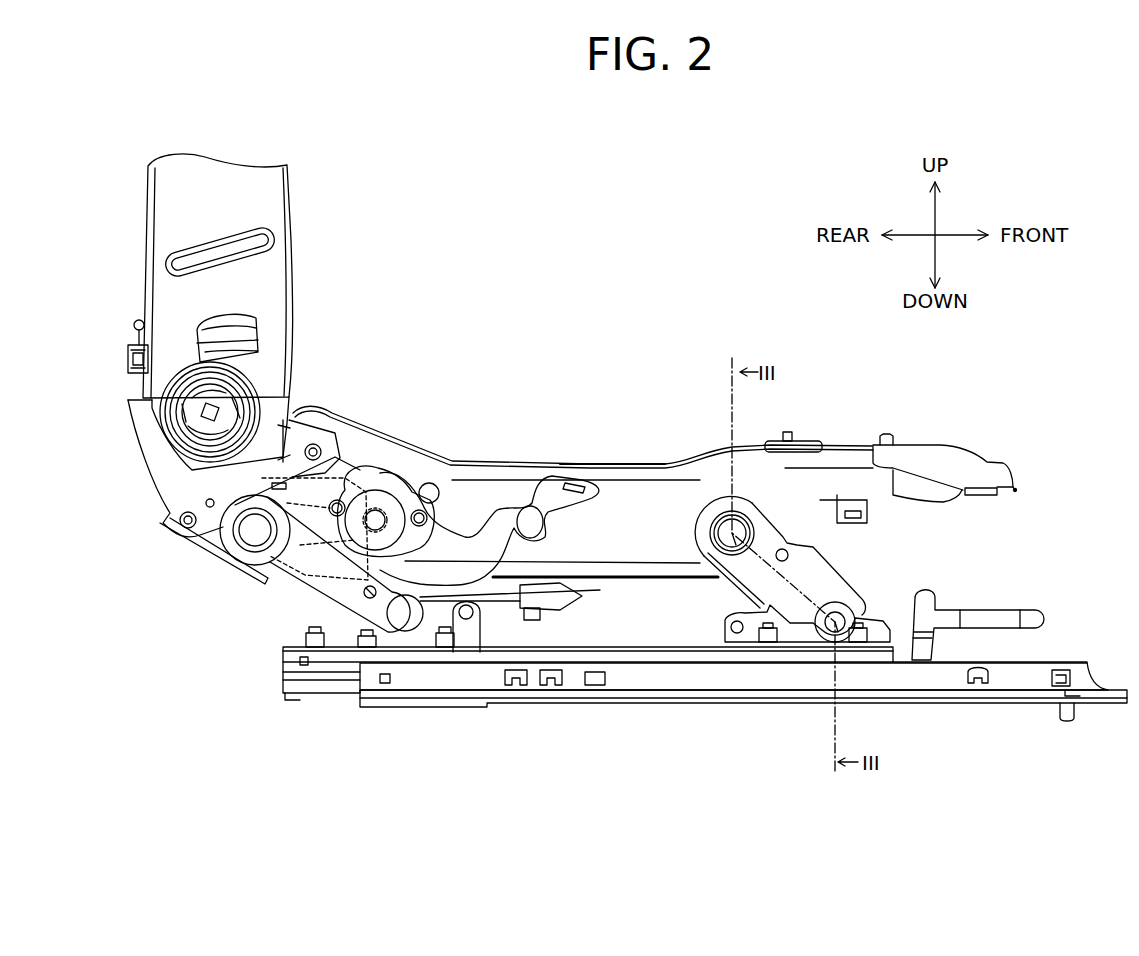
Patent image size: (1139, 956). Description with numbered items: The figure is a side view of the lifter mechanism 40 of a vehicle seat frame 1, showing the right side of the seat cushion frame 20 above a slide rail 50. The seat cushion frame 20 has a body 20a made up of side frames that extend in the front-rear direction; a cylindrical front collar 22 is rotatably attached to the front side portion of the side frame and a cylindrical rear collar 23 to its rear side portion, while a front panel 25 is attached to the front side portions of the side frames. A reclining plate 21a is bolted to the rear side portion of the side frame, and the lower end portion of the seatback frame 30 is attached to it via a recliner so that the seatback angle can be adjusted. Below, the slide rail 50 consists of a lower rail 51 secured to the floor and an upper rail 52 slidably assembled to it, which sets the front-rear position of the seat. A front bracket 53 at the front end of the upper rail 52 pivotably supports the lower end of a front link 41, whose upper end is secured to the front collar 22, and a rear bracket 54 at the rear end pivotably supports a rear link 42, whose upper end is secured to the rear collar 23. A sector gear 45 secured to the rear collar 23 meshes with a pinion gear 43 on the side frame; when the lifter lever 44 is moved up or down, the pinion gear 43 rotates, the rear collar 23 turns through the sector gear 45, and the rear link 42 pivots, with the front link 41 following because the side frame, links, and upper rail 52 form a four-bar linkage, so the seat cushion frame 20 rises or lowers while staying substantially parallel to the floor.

The vehicle seat frame 1 is at (600, 333).
The seat cushion frame 20 is at (454, 463).
The body 20a is at (626, 462).
The reclining plate 21a is at (157, 458).
The front collar 22 is at (725, 515).
The rear collar 23 is at (234, 541).
The front panel 25 is at (977, 462).
The seat back frame 30 is at (149, 209).
The lifter mechanism 40 is at (272, 591).
The front link 41 is at (720, 585).
The rear link 42 is at (303, 596).
The pinion gear 43 is at (378, 512).
The lifter lever 44 is at (552, 486).
The sector gear 45 is at (330, 445).
The slide rail 50 is at (357, 770).
The lower rail 51 is at (373, 688).
The upper rail 52 is at (312, 686).
The front bracket 53 is at (812, 642).
The rear bracket 54 is at (473, 625).